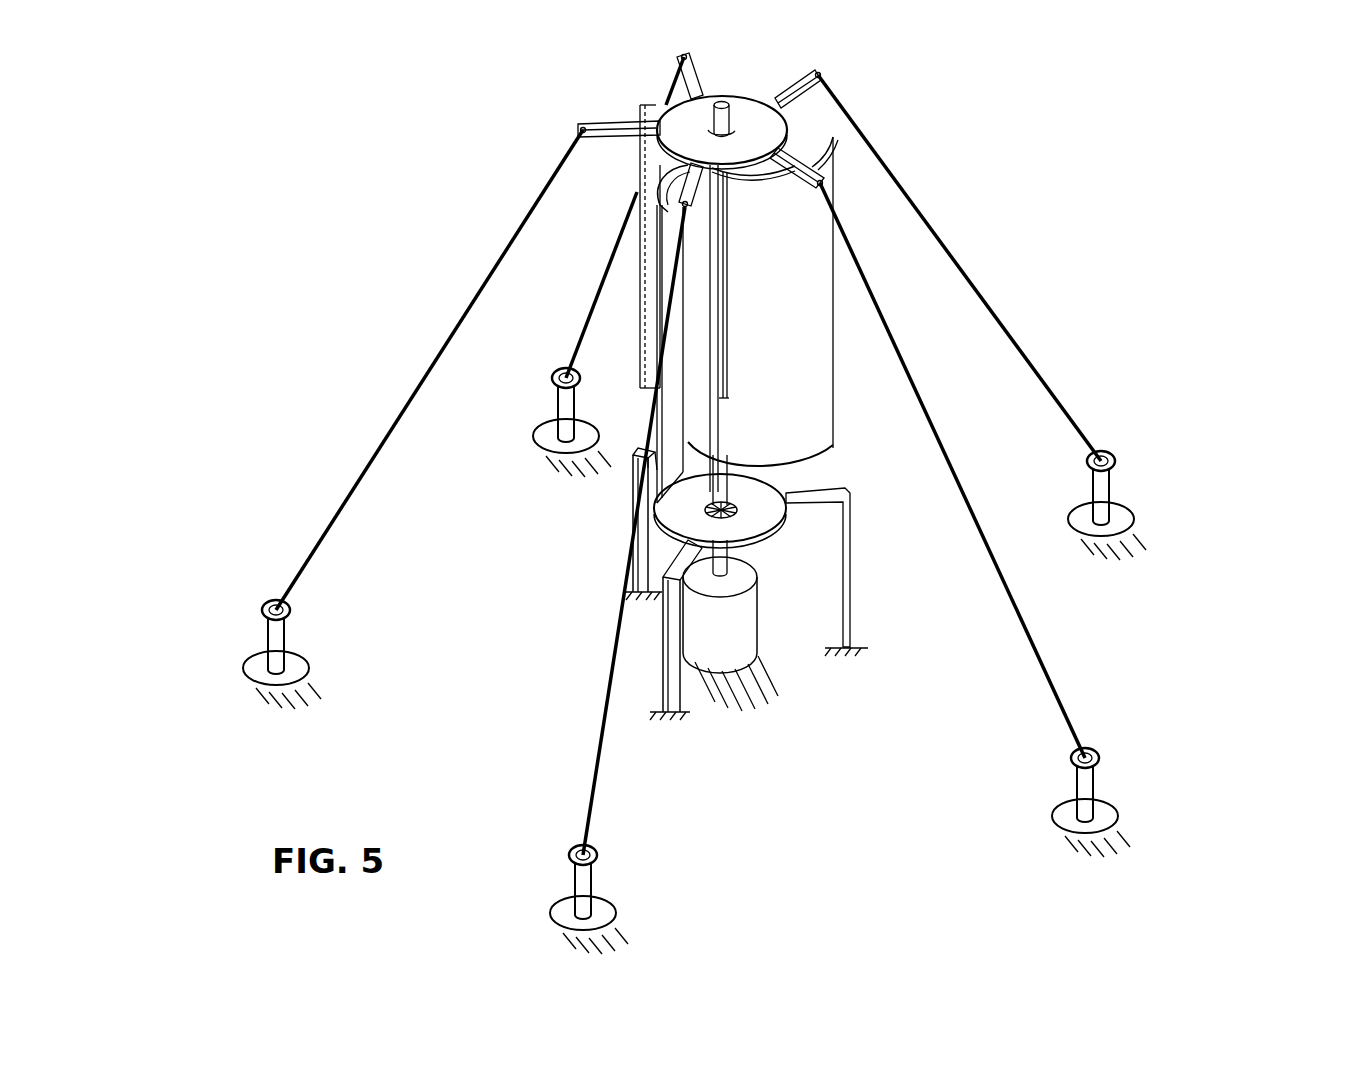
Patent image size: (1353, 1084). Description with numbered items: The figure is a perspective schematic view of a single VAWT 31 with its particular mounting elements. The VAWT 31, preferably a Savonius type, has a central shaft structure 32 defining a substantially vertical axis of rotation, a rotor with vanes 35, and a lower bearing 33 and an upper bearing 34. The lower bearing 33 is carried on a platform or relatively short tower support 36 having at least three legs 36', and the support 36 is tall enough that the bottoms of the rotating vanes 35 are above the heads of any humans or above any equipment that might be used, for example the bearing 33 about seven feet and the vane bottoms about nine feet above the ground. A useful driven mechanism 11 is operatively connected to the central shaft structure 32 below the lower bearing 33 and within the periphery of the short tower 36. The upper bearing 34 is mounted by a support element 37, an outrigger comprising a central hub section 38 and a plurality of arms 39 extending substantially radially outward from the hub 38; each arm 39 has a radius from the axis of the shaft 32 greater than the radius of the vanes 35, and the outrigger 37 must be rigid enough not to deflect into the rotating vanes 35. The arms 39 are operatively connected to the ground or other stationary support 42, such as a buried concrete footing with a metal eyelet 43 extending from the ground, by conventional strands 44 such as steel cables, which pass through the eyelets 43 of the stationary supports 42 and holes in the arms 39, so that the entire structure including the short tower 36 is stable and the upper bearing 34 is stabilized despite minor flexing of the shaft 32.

The driven mechanism 11 is at (745, 604).
The VAWT 31 is at (632, 300).
The central shaft structure 32 is at (724, 488).
The lower bearing 33 is at (758, 518).
The upper bearing 34 is at (735, 122).
The vanes 35 is at (818, 168).
The short tower support 36 is at (657, 630).
The legs 36' is at (738, 625).
The support element 37 is at (744, 112).
The central hub section 38 is at (739, 146).
The arms 39 is at (678, 60).
The stationary support 42 is at (226, 644).
The eyelet 43 is at (292, 611).
The strands 44 is at (584, 333).